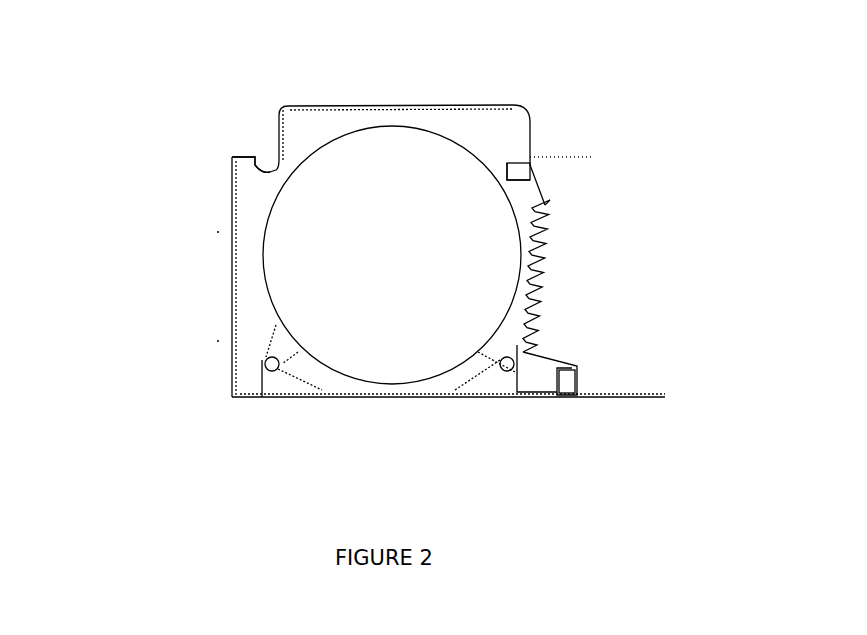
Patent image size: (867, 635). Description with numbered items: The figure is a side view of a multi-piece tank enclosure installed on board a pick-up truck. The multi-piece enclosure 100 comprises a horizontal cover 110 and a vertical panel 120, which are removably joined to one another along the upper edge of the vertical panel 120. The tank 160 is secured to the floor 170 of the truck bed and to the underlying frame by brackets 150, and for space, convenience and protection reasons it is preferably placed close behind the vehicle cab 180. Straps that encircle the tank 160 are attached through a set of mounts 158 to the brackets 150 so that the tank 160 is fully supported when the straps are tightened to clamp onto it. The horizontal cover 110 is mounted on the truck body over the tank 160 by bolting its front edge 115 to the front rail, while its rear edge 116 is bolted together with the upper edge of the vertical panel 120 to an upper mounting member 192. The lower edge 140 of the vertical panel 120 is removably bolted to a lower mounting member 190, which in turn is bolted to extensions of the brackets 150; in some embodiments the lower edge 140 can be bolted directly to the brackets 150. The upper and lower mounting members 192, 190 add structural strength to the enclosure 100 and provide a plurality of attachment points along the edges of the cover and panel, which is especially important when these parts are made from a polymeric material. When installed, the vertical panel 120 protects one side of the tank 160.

The multi-piece enclosure 100 is at (703, 113).
The horizontal cover 110 is at (510, 123).
The front edge 115 is at (255, 157).
The rear edge 116 is at (523, 180).
The vertical panel 120 is at (547, 243).
The lower edge 140 is at (577, 382).
The brackets 150 is at (493, 380).
The mounts 158 is at (290, 350).
The tank 160 is at (305, 247).
The floor 170 is at (640, 394).
The vehicle cab 180 is at (113, 93).
The lower mounting member 190 is at (566, 395).
The upper mounting member 192 is at (503, 172).